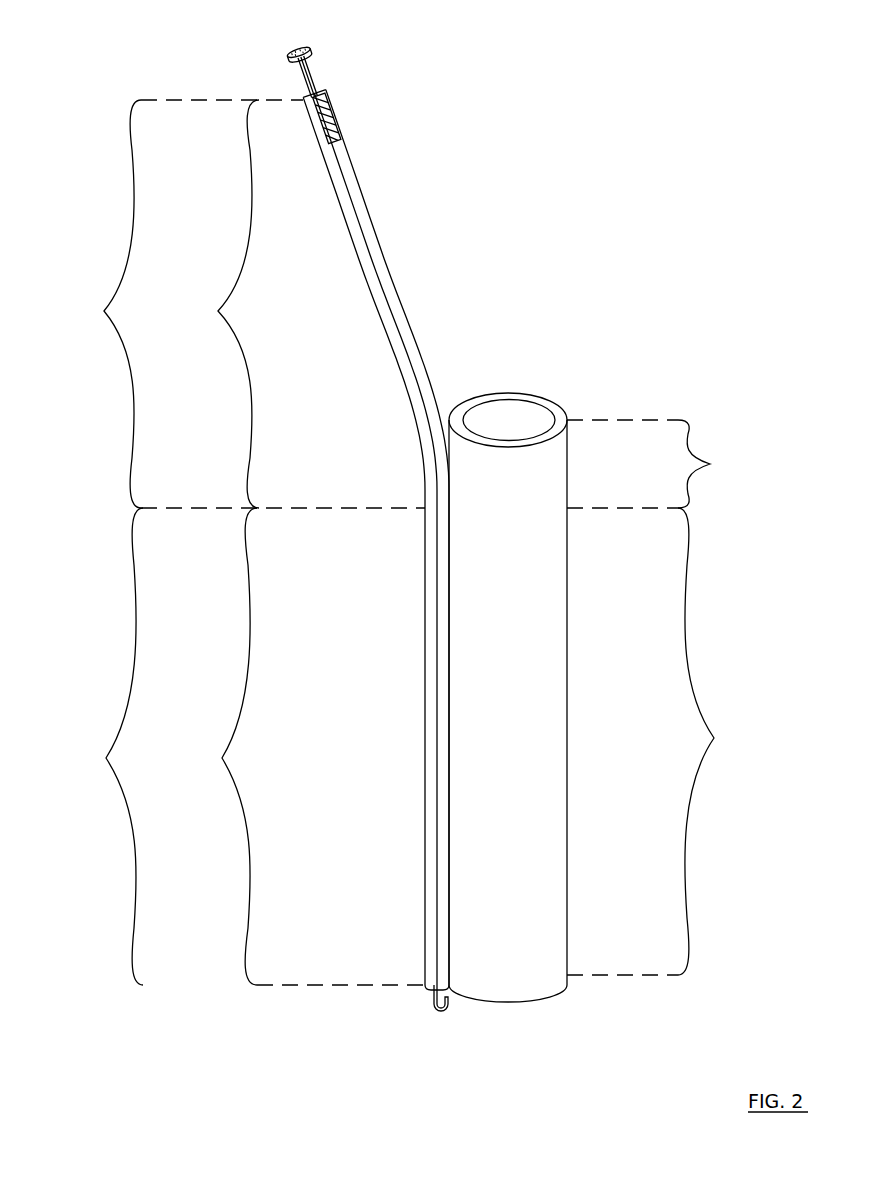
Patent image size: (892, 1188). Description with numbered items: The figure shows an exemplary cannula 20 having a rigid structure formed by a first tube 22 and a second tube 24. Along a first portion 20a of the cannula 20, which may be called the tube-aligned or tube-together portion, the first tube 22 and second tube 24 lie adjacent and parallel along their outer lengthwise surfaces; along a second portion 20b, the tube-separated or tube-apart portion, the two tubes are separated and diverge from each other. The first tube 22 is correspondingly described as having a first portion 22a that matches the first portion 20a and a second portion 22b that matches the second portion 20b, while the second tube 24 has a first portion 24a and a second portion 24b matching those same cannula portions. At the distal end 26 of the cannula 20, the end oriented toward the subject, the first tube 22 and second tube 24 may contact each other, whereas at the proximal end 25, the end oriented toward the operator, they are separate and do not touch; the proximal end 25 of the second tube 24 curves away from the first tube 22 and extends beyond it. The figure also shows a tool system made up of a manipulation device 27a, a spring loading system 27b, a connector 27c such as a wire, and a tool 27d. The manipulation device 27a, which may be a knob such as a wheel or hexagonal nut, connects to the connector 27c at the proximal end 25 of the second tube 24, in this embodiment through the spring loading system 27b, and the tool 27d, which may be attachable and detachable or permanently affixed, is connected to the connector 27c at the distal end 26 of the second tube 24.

The cannula 20 is at (744, 172).
The first portion of the cannula 20a is at (101, 746).
The second portion of the cannula 20b is at (100, 304).
The first tube 22 is at (570, 612).
The first portion of the first tube 22a is at (725, 741).
The second portion of the first tube 22b is at (724, 464).
The second tube 24 is at (425, 667).
The first portion of the second tube 24a is at (217, 746).
The second portion of the second tube 24b is at (218, 304).
The proximal end 25 is at (505, 345).
The distal end 26 is at (524, 1052).
The manipulation device 27a is at (318, 47).
The spring loading system 27b is at (325, 108).
The connector 27c is at (437, 720).
The tool 27d is at (432, 1002).